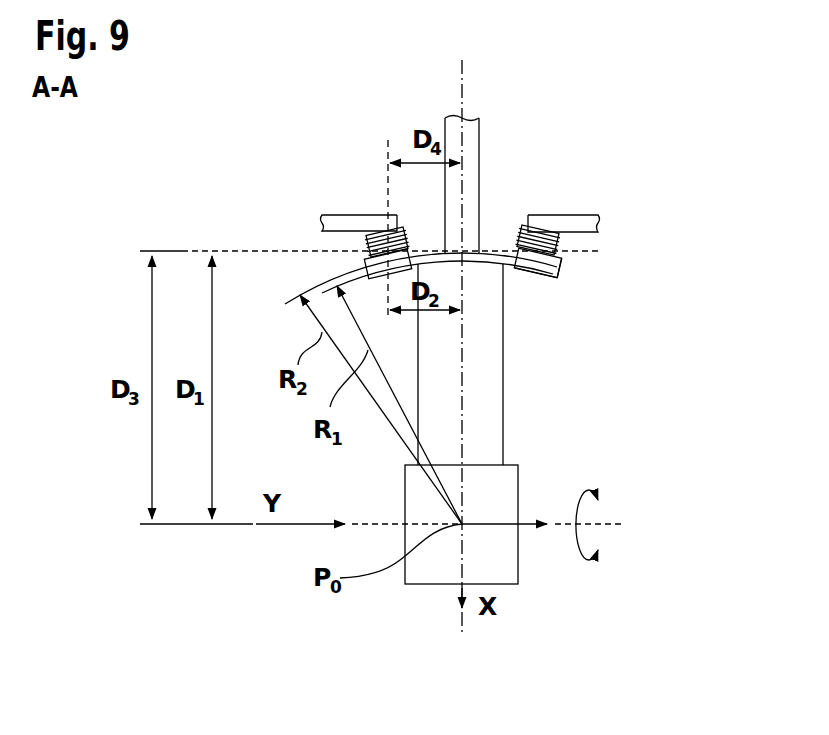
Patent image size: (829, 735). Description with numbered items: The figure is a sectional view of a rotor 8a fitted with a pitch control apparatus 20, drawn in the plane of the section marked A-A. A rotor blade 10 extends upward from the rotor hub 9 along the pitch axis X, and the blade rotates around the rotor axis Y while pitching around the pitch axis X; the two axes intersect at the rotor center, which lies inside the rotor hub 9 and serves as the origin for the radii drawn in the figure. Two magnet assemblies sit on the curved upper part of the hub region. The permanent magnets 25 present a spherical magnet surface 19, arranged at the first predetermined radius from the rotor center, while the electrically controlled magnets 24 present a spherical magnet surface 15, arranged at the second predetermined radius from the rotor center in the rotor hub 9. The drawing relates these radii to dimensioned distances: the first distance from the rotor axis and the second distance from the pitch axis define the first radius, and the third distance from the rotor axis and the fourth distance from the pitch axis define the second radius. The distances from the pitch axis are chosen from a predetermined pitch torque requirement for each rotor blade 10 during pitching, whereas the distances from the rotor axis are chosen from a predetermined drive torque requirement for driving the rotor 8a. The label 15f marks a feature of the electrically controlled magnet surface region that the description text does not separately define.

The rotor 8a is at (597, 140).
The rotor blade 10 is at (470, 136).
The rotor hub 9 is at (550, 397).
The pitch control apparatus 20 is at (361, 195).
The spherical magnet surface 15 is at (519, 229).
The electrically controlled magnets 24 is at (557, 237).
The spherical magnet surface 19 is at (541, 276).
The permanent magnets 25 is at (560, 263).
The pad contact face 15f is at (561, 275).